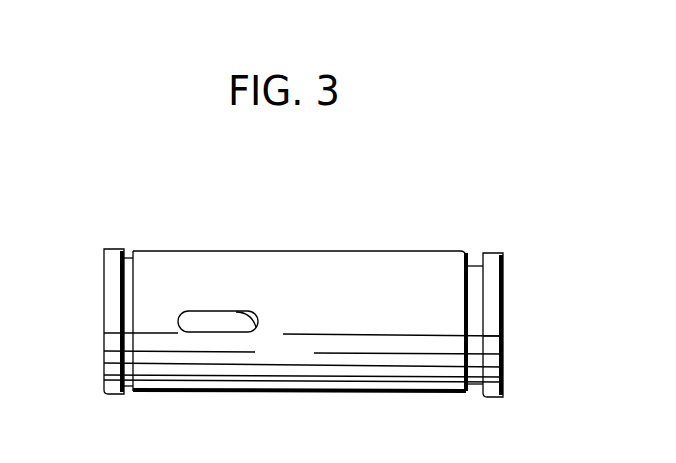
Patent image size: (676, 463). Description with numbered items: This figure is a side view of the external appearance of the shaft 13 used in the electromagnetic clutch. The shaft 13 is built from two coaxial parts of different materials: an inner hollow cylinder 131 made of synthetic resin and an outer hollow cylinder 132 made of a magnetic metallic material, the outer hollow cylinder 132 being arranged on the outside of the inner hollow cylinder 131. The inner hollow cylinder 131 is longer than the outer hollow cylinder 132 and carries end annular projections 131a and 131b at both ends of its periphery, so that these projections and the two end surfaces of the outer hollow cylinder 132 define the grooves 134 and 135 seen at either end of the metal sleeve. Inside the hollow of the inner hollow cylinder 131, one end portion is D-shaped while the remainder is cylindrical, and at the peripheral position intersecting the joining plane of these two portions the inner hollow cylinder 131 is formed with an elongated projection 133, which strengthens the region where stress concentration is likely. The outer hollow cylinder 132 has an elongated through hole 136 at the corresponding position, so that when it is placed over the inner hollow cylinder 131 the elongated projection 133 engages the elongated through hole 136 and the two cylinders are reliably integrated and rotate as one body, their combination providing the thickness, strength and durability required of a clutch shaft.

The shaft 13 is at (433, 246).
The inner hollow cylinder 131 is at (492, 315).
The end annular projection 131a is at (497, 253).
The end annular projection 131b is at (108, 248).
The outer hollow cylinder 132 is at (385, 382).
The elongated projection 133 is at (208, 323).
The groove 134 is at (127, 389).
The groove 135 is at (472, 385).
The elongated through hole 136 is at (258, 328).